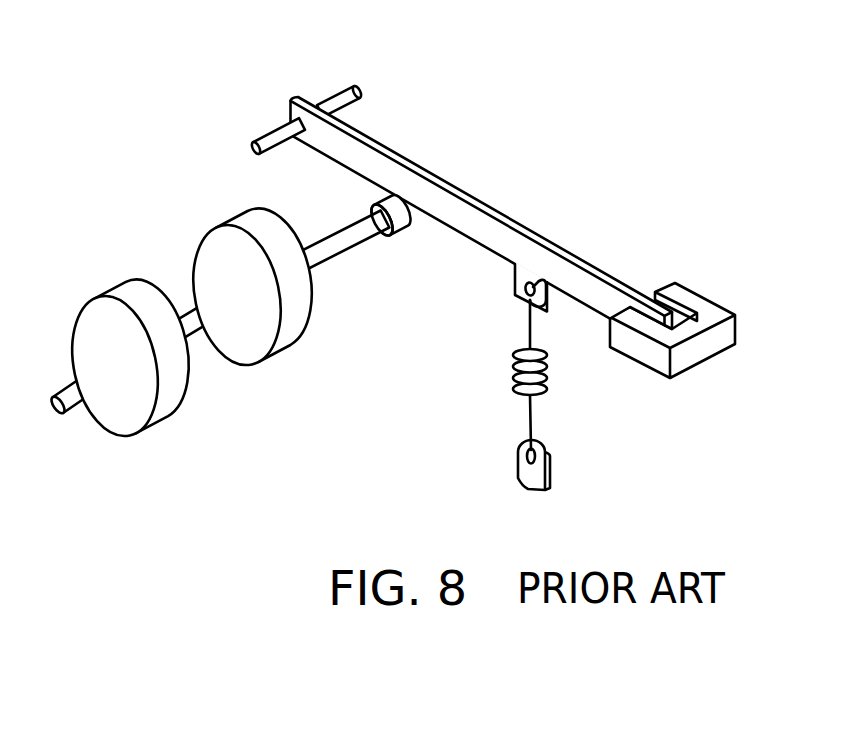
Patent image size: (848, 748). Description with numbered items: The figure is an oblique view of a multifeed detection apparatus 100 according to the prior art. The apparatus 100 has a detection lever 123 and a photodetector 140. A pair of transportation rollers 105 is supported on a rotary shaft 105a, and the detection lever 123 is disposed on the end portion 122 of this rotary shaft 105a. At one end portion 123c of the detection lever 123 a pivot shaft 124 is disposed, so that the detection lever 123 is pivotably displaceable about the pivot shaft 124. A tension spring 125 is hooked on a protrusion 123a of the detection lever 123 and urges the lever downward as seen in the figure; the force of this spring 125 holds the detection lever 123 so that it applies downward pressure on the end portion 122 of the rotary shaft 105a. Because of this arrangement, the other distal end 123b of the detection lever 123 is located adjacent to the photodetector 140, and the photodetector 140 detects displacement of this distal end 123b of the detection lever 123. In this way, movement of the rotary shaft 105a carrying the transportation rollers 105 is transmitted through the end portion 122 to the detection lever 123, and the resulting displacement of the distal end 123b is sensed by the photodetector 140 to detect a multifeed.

The multifeed detection apparatus 100 is at (421, 245).
The transportation rollers 105 is at (103, 298).
The rotary shaft 105a is at (337, 262).
The end portion 122 is at (392, 238).
The detection lever 123 is at (502, 213).
The protrusion 123a is at (525, 292).
The distal end 123b is at (673, 303).
The one end portion 123c is at (292, 100).
The pivot shaft 124 is at (345, 78).
The tension spring 125 is at (547, 377).
The photodetector 140 is at (712, 312).